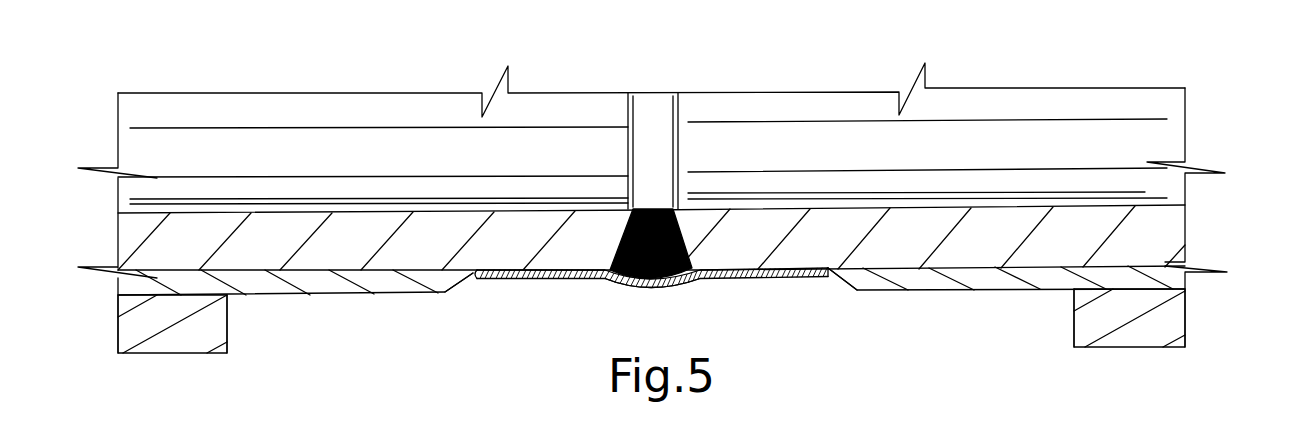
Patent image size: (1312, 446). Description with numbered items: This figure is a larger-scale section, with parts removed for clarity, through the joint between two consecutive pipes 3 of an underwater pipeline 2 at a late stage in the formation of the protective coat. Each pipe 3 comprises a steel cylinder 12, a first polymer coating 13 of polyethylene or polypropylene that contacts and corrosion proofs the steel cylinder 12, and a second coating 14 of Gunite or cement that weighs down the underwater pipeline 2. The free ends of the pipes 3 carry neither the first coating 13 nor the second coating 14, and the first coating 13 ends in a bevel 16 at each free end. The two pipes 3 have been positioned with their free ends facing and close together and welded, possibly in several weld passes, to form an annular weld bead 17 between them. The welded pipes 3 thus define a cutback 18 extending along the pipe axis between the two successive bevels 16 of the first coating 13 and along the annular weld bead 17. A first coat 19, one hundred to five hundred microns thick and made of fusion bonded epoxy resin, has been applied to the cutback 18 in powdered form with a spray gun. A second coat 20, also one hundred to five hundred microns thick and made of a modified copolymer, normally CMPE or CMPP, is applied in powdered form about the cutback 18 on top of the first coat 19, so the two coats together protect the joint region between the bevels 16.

The underwater pipeline 2 is at (293, 382).
The pipe 3 is at (373, 323).
The steel cylinder 12 is at (145, 225).
The first polymer coating 13 is at (123, 283).
The second coating 14 is at (130, 331).
The bevel 16 is at (463, 286).
The annular weld bead 17 is at (685, 209).
The cutback 18 is at (633, 313).
The first coat 19 is at (723, 278).
The second coat 20 is at (573, 280).